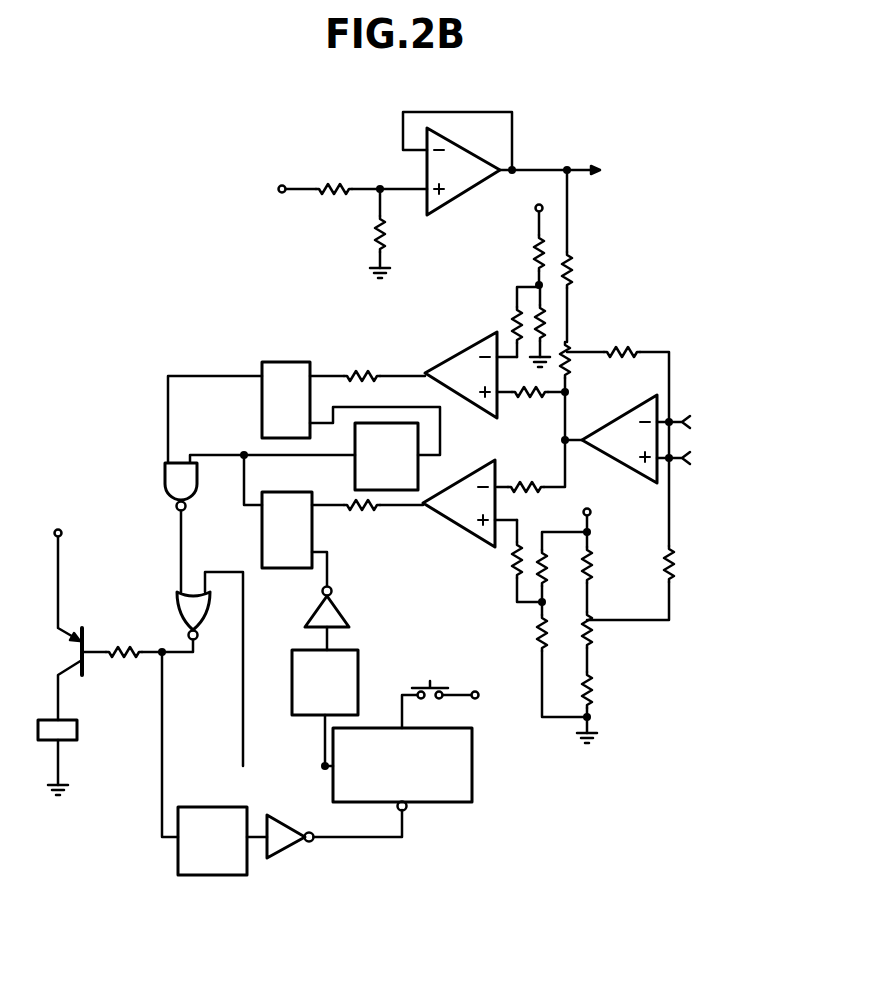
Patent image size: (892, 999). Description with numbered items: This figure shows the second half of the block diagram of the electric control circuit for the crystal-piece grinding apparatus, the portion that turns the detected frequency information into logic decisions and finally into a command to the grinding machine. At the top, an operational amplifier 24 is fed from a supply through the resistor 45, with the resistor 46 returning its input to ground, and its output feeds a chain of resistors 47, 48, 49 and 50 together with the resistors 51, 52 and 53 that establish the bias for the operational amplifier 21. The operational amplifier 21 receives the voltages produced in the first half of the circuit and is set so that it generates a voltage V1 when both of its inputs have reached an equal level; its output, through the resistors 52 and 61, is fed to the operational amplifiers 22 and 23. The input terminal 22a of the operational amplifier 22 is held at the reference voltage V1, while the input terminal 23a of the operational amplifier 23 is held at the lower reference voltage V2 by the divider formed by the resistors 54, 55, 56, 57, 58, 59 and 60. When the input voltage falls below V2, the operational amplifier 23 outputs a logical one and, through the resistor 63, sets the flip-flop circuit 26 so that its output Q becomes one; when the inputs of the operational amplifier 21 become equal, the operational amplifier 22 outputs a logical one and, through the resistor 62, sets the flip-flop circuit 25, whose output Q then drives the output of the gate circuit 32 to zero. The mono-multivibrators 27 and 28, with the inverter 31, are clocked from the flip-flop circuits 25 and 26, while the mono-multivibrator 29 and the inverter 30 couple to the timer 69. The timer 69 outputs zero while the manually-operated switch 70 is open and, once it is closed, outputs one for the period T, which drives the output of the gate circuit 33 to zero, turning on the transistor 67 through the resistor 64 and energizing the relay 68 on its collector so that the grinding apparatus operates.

The operational amplifier 21 is at (627, 412).
The operational amplifier 22 is at (460, 353).
The input terminal 22a is at (500, 360).
The operational amplifier 23 is at (456, 524).
The input terminal 23a is at (508, 518).
The operational amplifier 24 is at (470, 190).
The flip-flop circuit 25 is at (290, 361).
The flip-flop circuit 26 is at (285, 569).
The mono-multivibrator 27 is at (355, 474).
The mono-multivibrator 28 is at (358, 667).
The mono-multivibrator 29 is at (210, 876).
The inverter 30 is at (288, 852).
The inverter 31 is at (336, 604).
The gate circuit 32 is at (165, 488).
The gate circuit 33 is at (178, 612).
The resistor 45 is at (333, 183).
The resistor 46 is at (376, 236).
The resistor 47 is at (535, 252).
The resistor 48 is at (571, 268).
The resistor 49 is at (512, 332).
The resistor 50 is at (545, 322).
The resistor 51 is at (645, 352).
The resistor 52 is at (522, 396).
The resistor 53 is at (571, 351).
The resistor 54 is at (672, 565).
The resistor 55 is at (590, 565).
The resistor 56 is at (590, 630).
The resistor 57 is at (591, 700).
The resistor 58 is at (538, 640).
The resistor 59 is at (544, 570).
The resistor 60 is at (513, 565).
The resistor 61 is at (520, 485).
The resistor 62 is at (362, 368).
The resistor 63 is at (364, 509).
The resistor 64 is at (126, 660).
The transistor 67 is at (68, 632).
The relay 68 is at (77, 730).
The timer 69 is at (462, 803).
The manually-operated switch 70 is at (432, 683).